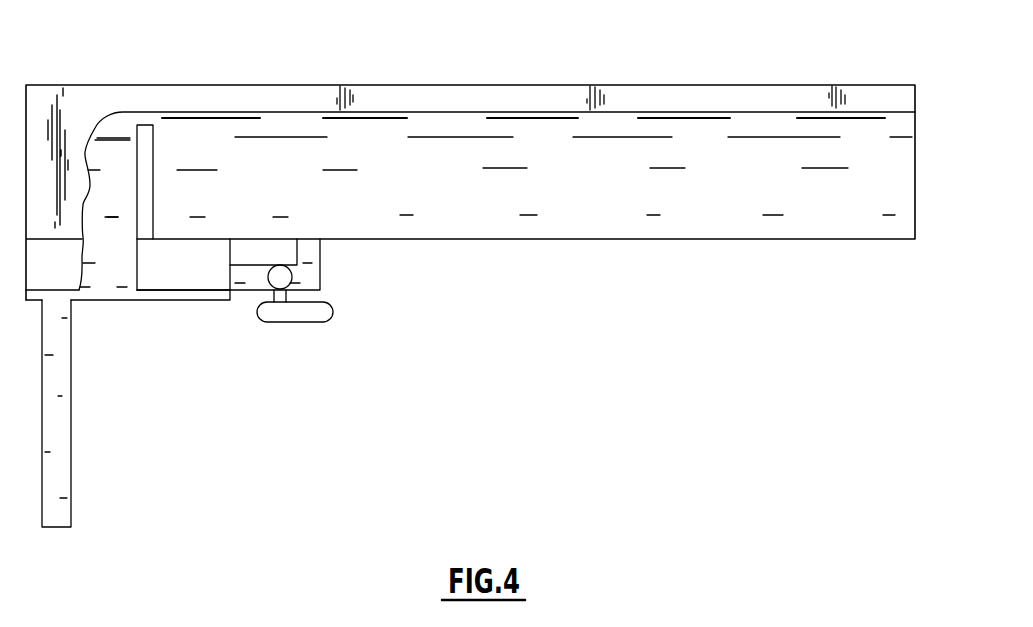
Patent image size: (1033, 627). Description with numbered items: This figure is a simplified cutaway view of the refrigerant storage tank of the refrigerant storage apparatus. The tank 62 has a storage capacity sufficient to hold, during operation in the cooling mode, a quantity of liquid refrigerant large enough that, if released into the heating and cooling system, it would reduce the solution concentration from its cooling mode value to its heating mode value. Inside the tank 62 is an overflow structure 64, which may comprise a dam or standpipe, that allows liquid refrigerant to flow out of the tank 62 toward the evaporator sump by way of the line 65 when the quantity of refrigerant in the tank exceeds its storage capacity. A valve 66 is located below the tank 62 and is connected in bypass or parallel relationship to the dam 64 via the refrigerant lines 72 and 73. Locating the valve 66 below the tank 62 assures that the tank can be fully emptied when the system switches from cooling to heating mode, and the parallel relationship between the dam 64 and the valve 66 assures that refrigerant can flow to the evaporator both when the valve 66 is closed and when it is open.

The tank 62 is at (510, 84).
The overflow structure 64 is at (153, 170).
The line 65 is at (71, 430).
The valve 66 is at (285, 322).
The refrigerant line 72 is at (320, 264).
The refrigerant line 73 is at (252, 280).